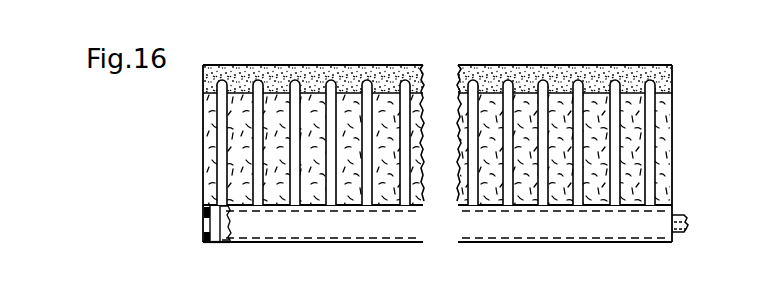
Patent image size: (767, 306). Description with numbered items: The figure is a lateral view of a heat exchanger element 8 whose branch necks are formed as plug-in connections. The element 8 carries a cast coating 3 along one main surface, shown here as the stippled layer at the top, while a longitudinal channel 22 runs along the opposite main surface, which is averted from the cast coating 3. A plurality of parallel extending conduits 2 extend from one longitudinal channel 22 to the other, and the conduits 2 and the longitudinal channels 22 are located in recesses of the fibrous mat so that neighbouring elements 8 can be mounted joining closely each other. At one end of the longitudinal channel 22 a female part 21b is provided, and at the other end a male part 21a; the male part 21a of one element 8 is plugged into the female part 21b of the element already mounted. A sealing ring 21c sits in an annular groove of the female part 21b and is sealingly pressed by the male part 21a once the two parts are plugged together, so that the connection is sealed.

The conduit 2 is at (222, 114).
The cast coating 3 is at (299, 64).
The heat exchanger element 8 is at (366, 62).
The male part 21a is at (689, 233).
The female part 21b is at (205, 234).
The sealing ring 21c is at (205, 219).
The longitudinal channel 22 is at (372, 231).